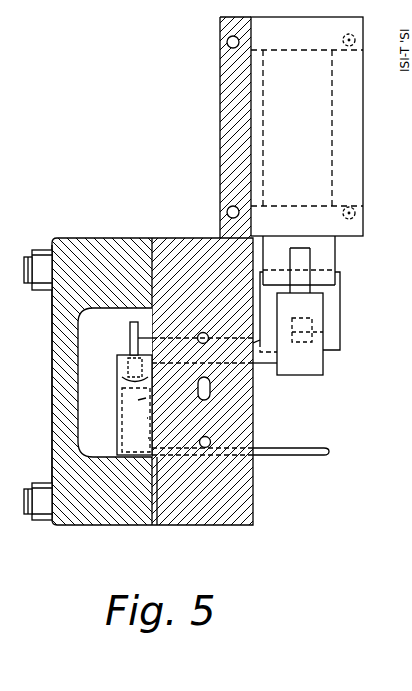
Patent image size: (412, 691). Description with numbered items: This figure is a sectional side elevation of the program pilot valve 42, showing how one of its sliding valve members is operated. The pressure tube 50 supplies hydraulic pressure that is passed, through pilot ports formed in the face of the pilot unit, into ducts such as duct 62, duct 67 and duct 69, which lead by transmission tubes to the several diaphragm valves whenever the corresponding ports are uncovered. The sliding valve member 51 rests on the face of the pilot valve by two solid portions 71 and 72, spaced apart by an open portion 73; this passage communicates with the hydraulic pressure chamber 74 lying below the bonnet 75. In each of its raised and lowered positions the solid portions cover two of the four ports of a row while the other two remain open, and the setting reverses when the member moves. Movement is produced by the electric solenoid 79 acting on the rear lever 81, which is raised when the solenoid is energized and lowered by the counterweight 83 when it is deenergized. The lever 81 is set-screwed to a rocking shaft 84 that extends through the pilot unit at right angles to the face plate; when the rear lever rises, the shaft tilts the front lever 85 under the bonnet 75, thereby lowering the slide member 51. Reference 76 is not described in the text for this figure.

The program pilot valve 42 is at (148, 193).
The pressure tube 50 is at (311, 448).
The sliding valve member 51 is at (122, 393).
The duct 62 is at (208, 390).
The duct 67 is at (205, 343).
The duct 69 is at (210, 438).
The solid portion 71 is at (117, 373).
The solid portion 72 is at (147, 418).
The open portion 73 is at (138, 400).
The hydraulic pressure chamber 74 is at (78, 333).
The bonnet 75 is at (53, 378).
The locking member portion 76 is at (148, 438).
The electric solenoid 79 is at (363, 110).
The lever 81 is at (323, 363).
The counterweight 83 is at (340, 312).
The rocking shaft 84 is at (257, 341).
The front lever 85 is at (130, 326).